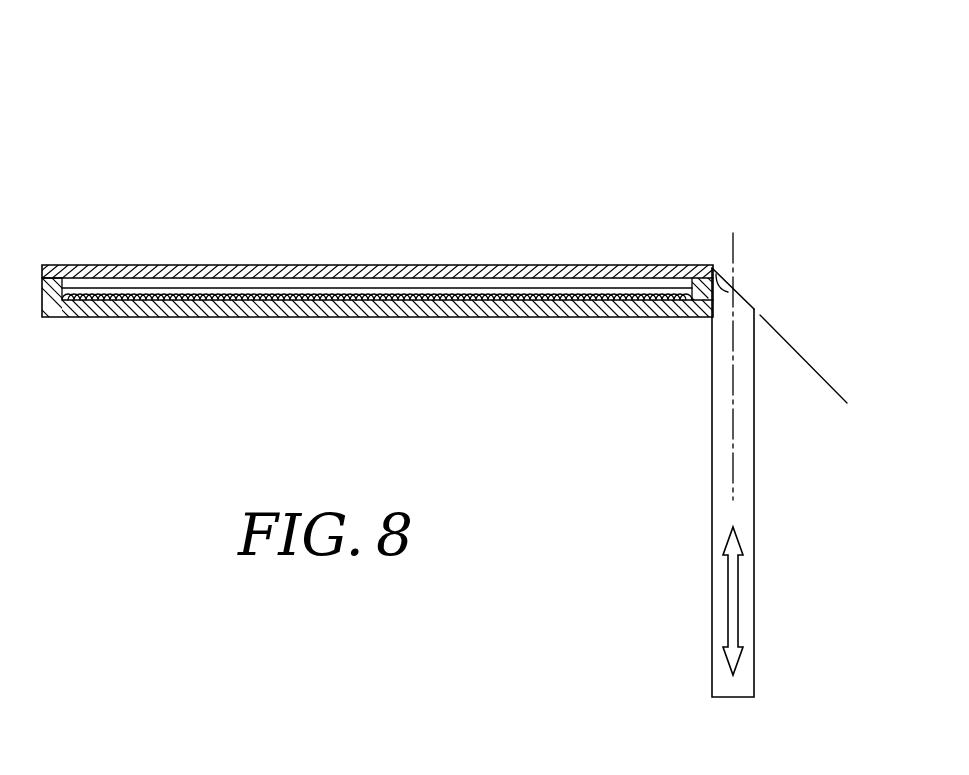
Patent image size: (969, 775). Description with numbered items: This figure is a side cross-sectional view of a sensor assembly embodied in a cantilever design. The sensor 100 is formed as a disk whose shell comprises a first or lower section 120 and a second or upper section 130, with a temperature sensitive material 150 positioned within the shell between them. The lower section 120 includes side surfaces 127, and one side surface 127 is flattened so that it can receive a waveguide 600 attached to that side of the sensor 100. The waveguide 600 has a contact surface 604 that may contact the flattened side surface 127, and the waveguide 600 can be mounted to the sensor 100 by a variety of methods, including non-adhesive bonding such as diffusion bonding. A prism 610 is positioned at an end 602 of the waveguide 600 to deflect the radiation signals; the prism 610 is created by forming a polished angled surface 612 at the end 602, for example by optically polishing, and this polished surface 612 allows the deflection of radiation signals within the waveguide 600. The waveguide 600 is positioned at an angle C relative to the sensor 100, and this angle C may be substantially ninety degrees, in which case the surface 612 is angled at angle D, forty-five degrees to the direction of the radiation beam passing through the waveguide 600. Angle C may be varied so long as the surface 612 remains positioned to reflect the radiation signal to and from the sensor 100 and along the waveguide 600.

The sensor 100 is at (132, 229).
The lower section 120 is at (268, 310).
The side surface 127 is at (690, 303).
The upper section 130 is at (358, 272).
The temperature sensitive material 150 is at (447, 294).
The waveguide 600 is at (711, 468).
The end 602 is at (723, 312).
The contact surface 604 is at (733, 289).
The prism 610 is at (739, 290).
The polished angled surface 612 is at (744, 292).
The angle C is at (711, 438).
The angle D is at (835, 396).